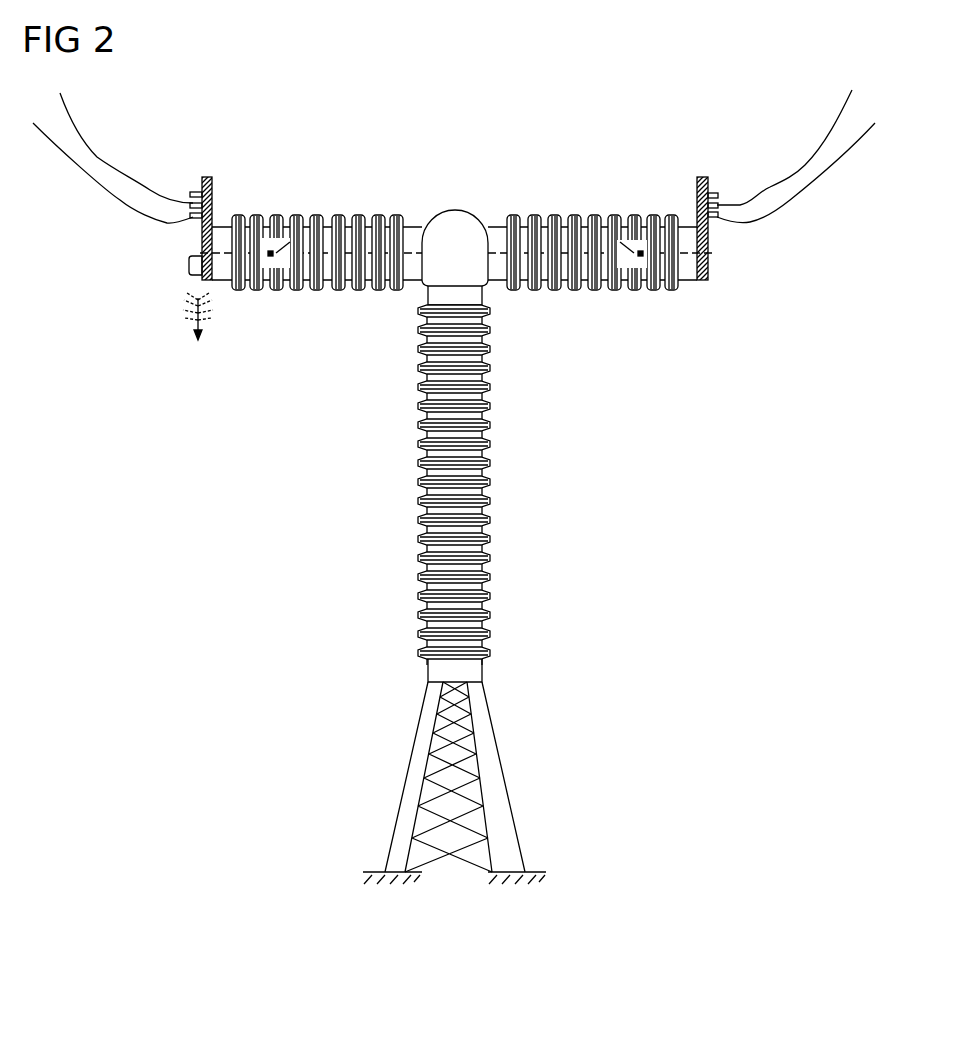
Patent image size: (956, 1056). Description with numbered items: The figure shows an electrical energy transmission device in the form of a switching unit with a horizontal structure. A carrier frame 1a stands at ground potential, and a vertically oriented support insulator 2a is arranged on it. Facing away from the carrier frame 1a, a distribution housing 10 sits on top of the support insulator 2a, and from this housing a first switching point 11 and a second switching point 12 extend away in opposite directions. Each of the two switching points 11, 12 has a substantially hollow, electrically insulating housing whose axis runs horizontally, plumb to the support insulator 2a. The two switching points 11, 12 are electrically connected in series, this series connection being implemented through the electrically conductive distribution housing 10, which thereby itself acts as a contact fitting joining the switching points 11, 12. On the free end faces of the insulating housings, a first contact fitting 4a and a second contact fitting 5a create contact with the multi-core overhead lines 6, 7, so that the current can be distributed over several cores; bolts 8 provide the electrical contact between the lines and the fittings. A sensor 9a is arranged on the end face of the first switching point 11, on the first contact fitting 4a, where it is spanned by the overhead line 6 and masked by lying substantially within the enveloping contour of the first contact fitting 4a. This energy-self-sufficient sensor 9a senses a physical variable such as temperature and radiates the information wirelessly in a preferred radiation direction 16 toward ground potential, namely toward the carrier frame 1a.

The carrier frame 1a is at (404, 778).
The support insulator 2a is at (418, 490).
The first contact fitting 4a is at (213, 185).
The second contact fitting 5a is at (698, 282).
The overhead line 6 is at (133, 182).
The overhead line 7 is at (770, 185).
The bolts 8 is at (197, 190).
The sensor 9a is at (190, 270).
The distribution housing 10 is at (450, 209).
The first switching point 11 is at (313, 217).
The second switching point 12 is at (588, 217).
The preferred radiation direction 16 is at (206, 320).